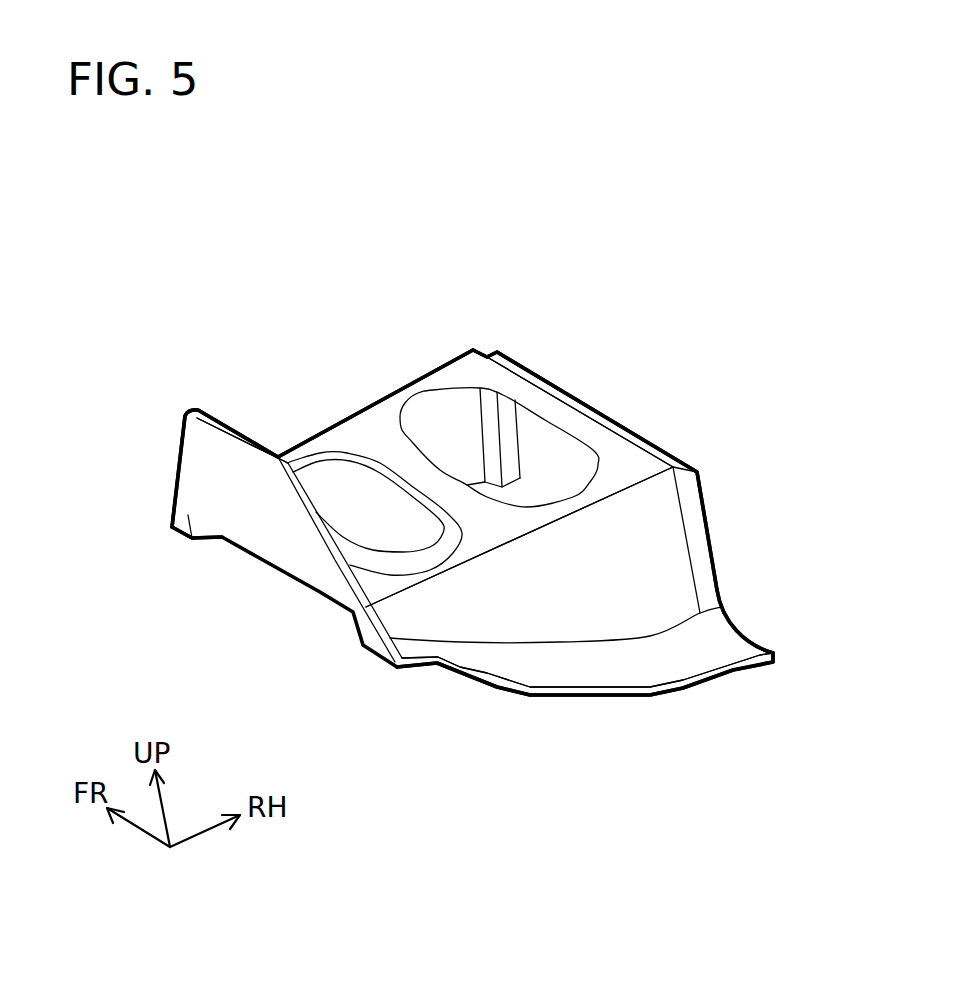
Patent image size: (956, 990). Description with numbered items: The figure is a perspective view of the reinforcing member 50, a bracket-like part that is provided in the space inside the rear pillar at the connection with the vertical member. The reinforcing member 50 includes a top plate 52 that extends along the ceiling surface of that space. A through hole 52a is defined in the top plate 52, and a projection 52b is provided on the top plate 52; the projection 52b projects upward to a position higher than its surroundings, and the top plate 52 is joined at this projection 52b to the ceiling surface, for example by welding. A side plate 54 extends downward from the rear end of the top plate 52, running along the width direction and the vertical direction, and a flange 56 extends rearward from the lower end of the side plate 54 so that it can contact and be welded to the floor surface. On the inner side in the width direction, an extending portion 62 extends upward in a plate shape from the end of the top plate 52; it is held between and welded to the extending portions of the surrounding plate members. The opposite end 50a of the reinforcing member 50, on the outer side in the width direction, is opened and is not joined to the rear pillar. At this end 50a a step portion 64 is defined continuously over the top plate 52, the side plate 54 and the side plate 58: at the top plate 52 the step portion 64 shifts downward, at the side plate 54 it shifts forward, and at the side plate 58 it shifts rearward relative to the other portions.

The reinforcing member 50 is at (196, 233).
The end of the reinforcing member 50a is at (620, 425).
The top plate 52 is at (370, 437).
The through hole 52a is at (540, 447).
The projection 52b is at (335, 483).
The side plate 54 is at (528, 603).
The flange 56 is at (660, 660).
The side plate 58 is at (433, 423).
The extending portion 62 is at (197, 460).
The step portion 64 is at (710, 535).